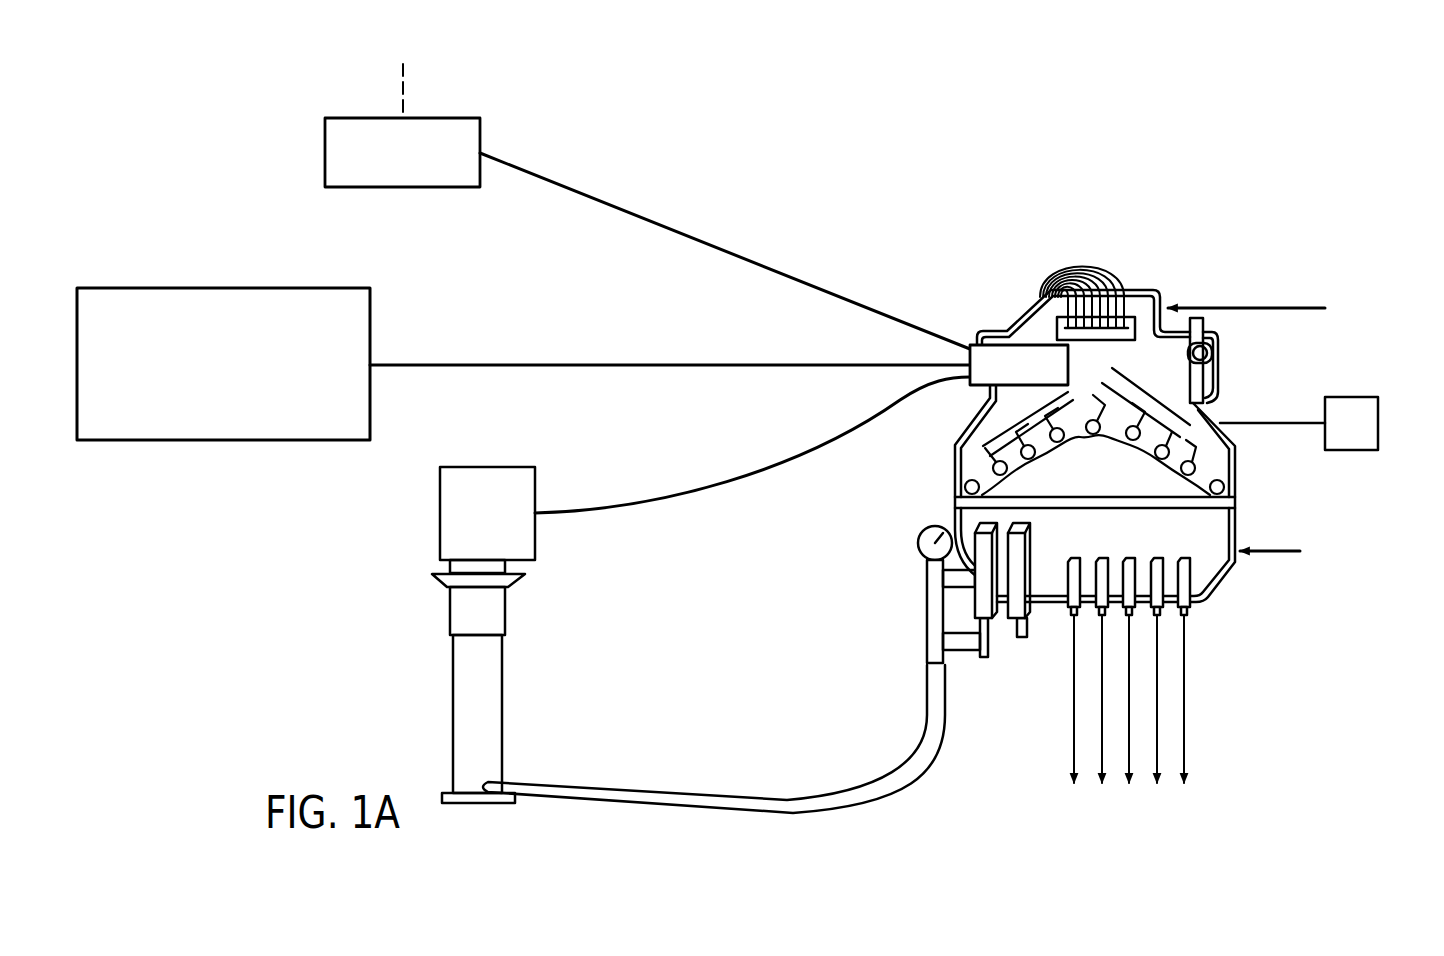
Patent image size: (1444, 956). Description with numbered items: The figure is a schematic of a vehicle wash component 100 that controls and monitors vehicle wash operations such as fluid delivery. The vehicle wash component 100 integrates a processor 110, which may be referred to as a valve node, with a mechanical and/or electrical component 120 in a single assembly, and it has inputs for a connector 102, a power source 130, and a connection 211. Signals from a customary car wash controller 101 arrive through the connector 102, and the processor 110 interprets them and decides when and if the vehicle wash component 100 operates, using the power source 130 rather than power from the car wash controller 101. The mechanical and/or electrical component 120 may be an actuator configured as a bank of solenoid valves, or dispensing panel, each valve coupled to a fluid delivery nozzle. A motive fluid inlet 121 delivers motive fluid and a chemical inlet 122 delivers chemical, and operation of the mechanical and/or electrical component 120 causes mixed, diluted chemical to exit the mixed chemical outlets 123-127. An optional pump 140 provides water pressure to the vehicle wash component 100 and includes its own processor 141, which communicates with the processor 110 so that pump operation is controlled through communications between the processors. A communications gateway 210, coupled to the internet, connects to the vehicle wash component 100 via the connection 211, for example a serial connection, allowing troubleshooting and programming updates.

The vehicle wash component 100 is at (1296, 242).
The car wash controller 101 is at (224, 283).
The connector 102 is at (450, 363).
The processor 110 is at (992, 330).
The mechanical and/or electrical component 120 is at (1144, 281).
The motive fluid inlet 121 is at (1250, 306).
The chemical inlet 122 is at (1288, 548).
The mixed chemical outlets 123-127 is at (1187, 697).
The power source 130 is at (1353, 390).
The pump 140 is at (424, 512).
The processor 141 is at (540, 566).
The communications gateway 210 is at (360, 110).
The connection 211 is at (655, 232).